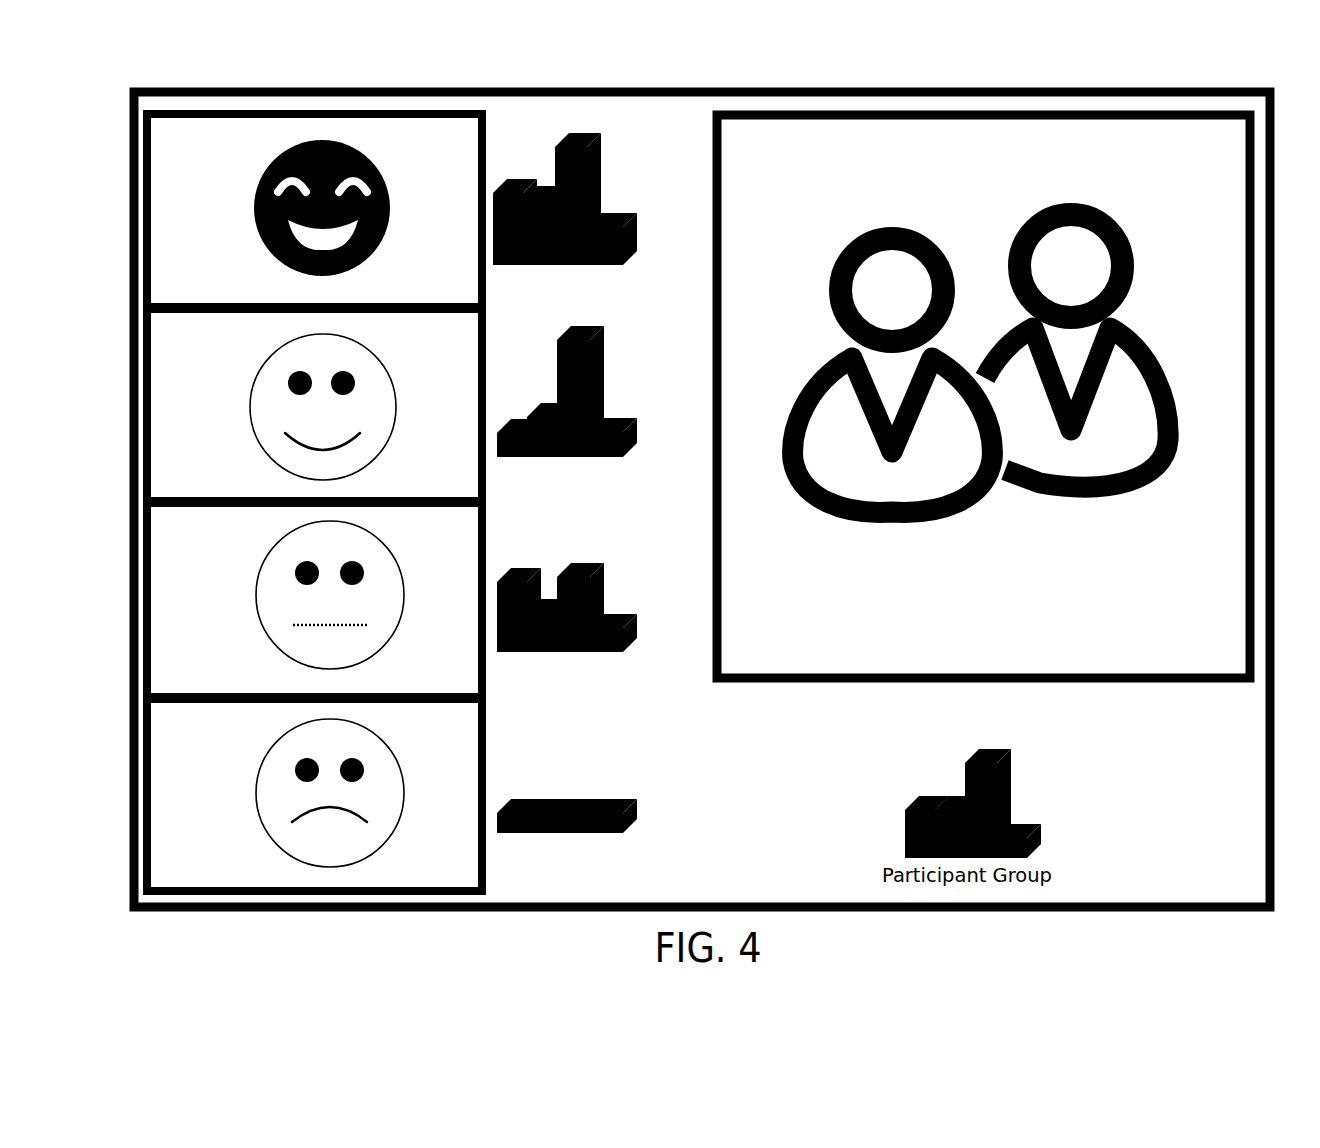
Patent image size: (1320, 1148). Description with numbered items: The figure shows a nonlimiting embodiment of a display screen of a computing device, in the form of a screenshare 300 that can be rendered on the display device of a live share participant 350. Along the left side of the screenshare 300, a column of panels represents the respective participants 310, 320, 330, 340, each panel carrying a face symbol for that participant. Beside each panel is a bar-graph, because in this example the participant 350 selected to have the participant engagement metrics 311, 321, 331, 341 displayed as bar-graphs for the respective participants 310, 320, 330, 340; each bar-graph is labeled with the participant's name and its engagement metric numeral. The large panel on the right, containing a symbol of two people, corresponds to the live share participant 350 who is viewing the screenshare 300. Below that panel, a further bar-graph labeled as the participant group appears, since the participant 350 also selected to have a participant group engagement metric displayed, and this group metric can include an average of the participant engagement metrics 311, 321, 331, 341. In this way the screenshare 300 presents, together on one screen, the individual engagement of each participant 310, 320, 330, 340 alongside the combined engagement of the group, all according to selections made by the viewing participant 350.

The screenshare 300 is at (1122, 69).
The participant 310 is at (314, 224).
The participant 320 is at (314, 418).
The participant 330 is at (314, 609).
The participant 340 is at (280, 803).
The live share participant 350 is at (983, 396).
The participant engagement metric 311 is at (565, 226).
The participant engagement metric 321 is at (567, 415).
The participant engagement metric 331 is at (567, 636).
The participant engagement metric 341 is at (567, 845).